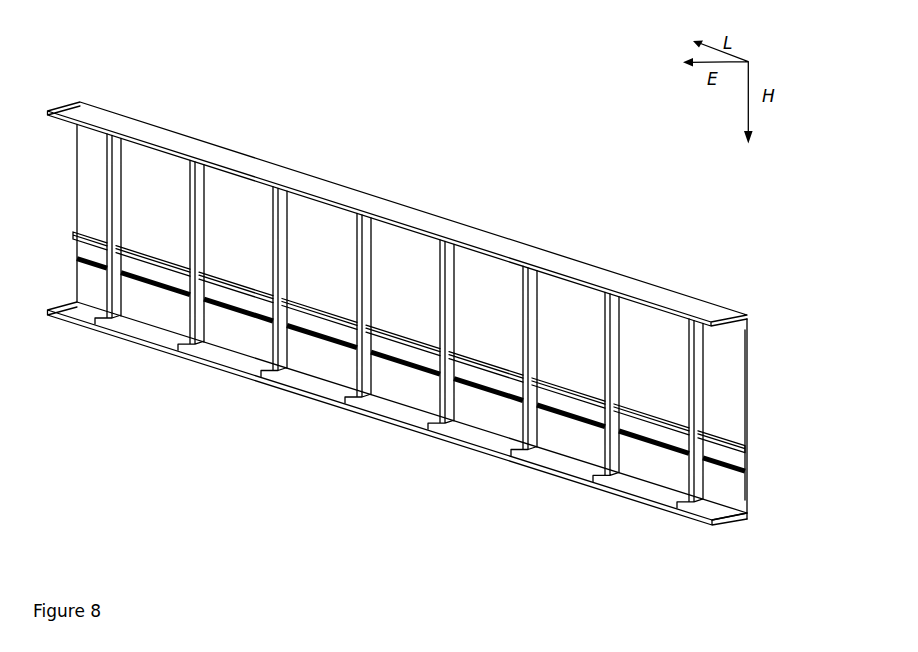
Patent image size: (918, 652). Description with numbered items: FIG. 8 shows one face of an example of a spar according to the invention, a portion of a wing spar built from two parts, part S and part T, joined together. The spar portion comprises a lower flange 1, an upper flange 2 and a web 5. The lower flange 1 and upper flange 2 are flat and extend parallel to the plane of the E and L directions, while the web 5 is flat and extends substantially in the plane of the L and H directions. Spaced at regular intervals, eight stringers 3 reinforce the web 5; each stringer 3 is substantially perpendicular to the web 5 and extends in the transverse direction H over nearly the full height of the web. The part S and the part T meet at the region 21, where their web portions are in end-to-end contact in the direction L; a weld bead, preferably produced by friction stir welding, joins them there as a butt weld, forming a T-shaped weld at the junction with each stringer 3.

The lower flange 1 is at (390, 413).
The upper flange 2 is at (389, 207).
The stringer 3 is at (532, 300).
The web 5 is at (572, 342).
The region 21 is at (242, 317).
The part S is at (728, 383).
The part T is at (727, 499).